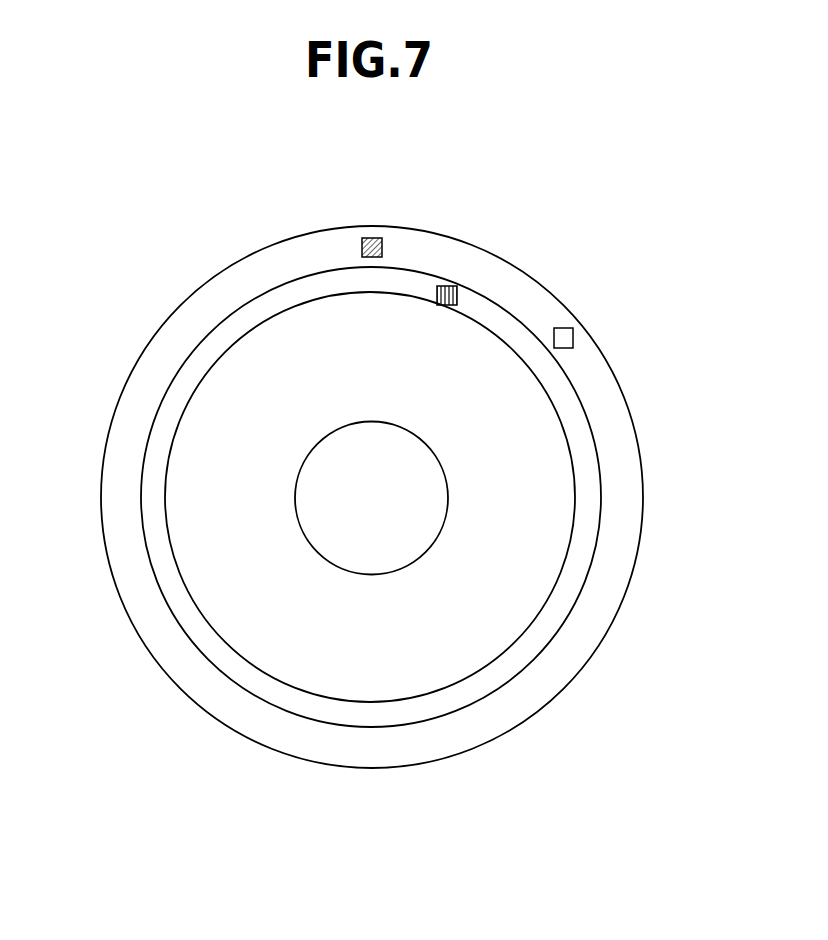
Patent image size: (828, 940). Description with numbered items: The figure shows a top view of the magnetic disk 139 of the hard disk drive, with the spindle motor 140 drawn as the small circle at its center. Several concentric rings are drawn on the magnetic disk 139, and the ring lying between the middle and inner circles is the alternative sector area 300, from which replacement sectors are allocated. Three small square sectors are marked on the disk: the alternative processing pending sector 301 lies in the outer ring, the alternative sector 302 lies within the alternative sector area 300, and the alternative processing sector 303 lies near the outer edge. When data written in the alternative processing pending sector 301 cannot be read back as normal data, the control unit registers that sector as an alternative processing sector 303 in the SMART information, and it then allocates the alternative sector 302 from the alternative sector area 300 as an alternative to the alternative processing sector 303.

The magnetic disk 139 is at (168, 320).
The spindle motor 140 is at (320, 443).
The alternative sector area 300 is at (281, 302).
The alternative processing pending sector 301 is at (372, 238).
The alternative sector 302 is at (447, 286).
The alternative processing sector 303 is at (563, 328).